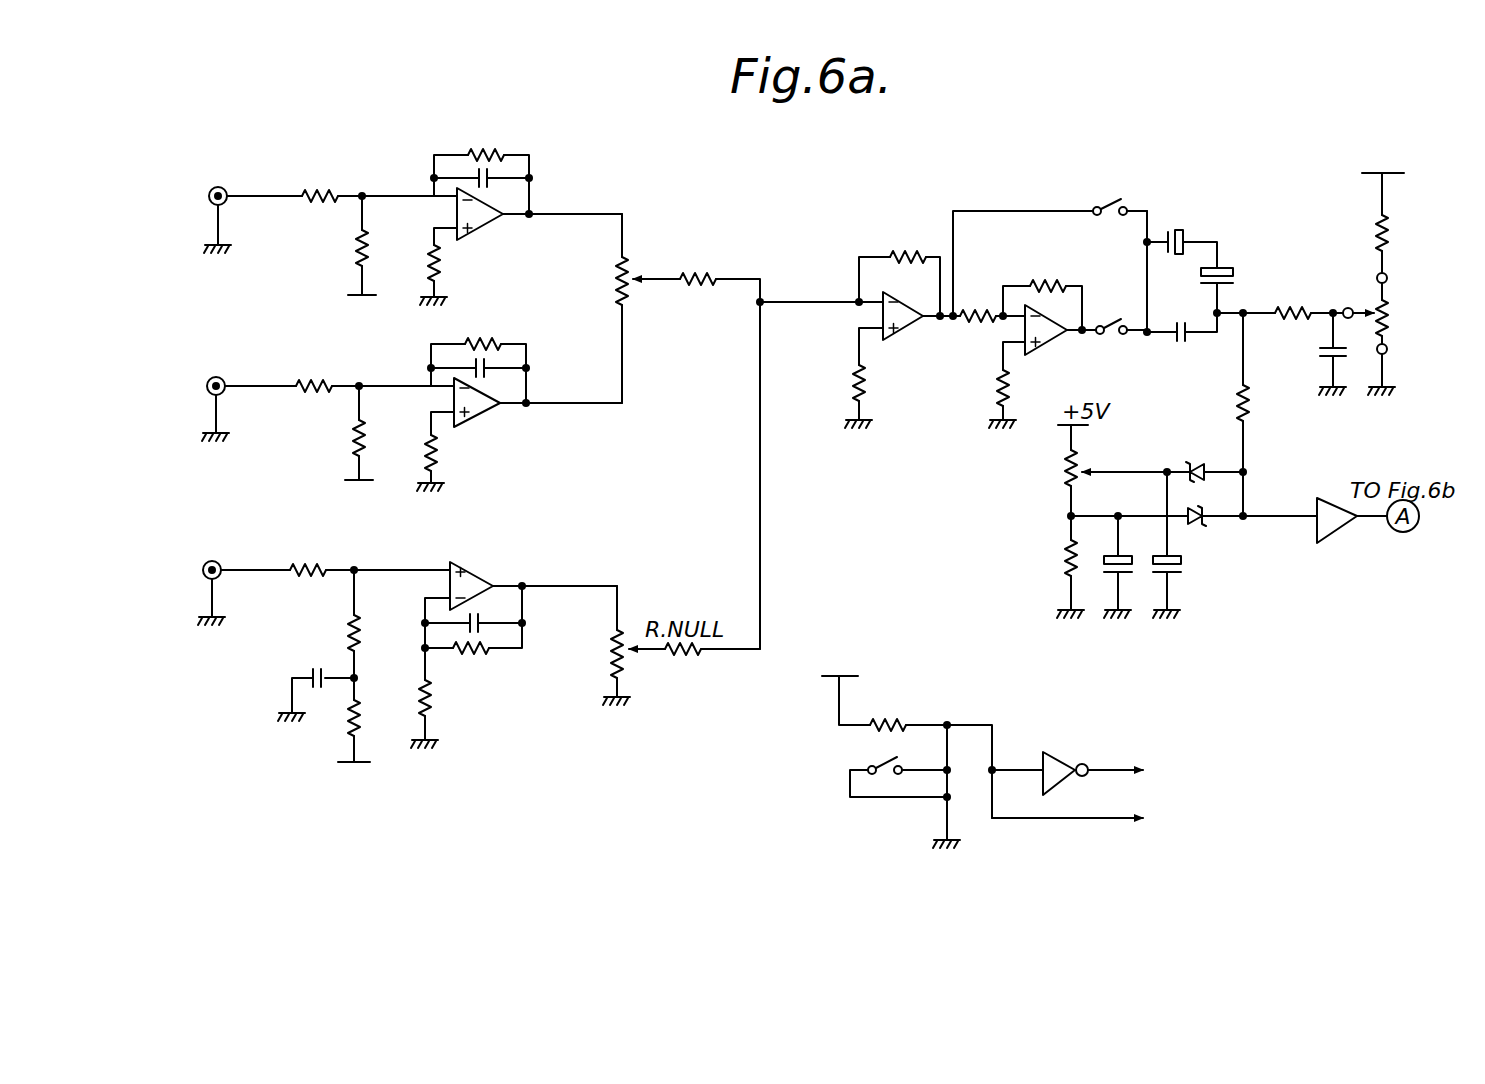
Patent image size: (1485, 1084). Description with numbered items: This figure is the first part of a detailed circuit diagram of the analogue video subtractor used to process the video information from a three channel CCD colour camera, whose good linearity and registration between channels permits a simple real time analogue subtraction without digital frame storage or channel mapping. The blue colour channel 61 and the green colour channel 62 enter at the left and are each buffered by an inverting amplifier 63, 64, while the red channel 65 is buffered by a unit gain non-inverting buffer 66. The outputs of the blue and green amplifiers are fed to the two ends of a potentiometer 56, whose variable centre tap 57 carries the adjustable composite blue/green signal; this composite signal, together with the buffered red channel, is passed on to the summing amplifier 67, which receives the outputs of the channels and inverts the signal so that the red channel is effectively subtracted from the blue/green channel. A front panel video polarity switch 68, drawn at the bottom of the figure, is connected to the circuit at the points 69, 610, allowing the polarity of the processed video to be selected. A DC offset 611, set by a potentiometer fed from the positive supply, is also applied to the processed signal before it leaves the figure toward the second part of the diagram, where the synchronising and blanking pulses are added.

The potentiometer 56 is at (636, 236).
The variable centre tap 57 is at (638, 298).
The blue colour channel 61 is at (219, 186).
The green colour channel 62 is at (218, 377).
The inverting amplifier 63 is at (554, 192).
The inverting amplifier 64 is at (504, 430).
The red channel 65 is at (214, 560).
The unit gain non-inverting buffer 66 is at (498, 556).
The summing amplifier 67 is at (911, 343).
The video polarity switch 68 is at (818, 716).
The connection point 69 is at (1111, 202).
The connection point 610 is at (1105, 318).
The DC offset 611 is at (1366, 297).